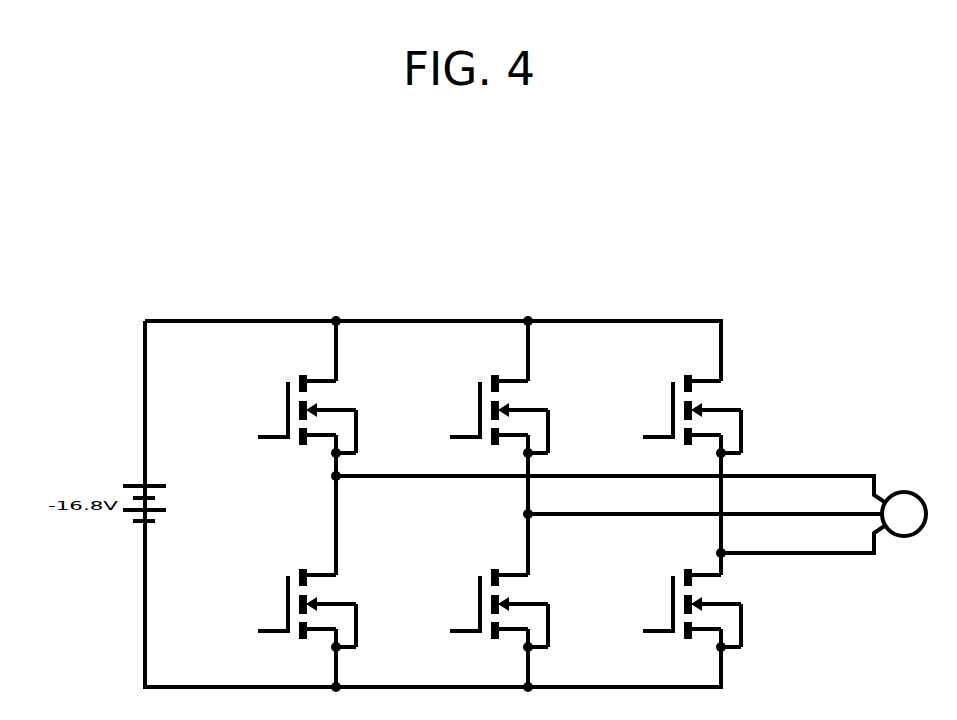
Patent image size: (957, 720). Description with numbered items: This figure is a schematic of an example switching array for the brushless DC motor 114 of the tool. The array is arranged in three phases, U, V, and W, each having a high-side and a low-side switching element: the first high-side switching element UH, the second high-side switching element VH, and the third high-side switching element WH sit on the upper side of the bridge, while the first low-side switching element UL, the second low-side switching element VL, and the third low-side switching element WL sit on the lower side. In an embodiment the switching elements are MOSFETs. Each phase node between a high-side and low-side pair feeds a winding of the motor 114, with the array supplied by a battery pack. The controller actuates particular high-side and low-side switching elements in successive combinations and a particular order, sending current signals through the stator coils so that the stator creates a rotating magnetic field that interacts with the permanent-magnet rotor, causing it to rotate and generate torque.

The motor 114 is at (906, 486).
The first high-side switching element UH is at (289, 416).
The second high-side switching element VH is at (485, 416).
The third high-side switching element WH is at (679, 416).
The first low-side switching element UL is at (298, 610).
The second low-side switching element VL is at (494, 610).
The third low-side switching element WL is at (679, 610).